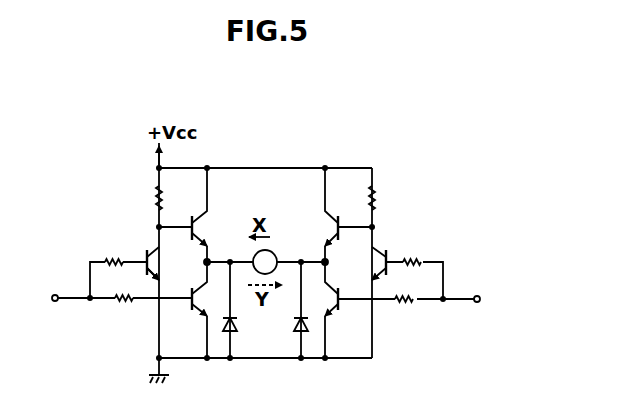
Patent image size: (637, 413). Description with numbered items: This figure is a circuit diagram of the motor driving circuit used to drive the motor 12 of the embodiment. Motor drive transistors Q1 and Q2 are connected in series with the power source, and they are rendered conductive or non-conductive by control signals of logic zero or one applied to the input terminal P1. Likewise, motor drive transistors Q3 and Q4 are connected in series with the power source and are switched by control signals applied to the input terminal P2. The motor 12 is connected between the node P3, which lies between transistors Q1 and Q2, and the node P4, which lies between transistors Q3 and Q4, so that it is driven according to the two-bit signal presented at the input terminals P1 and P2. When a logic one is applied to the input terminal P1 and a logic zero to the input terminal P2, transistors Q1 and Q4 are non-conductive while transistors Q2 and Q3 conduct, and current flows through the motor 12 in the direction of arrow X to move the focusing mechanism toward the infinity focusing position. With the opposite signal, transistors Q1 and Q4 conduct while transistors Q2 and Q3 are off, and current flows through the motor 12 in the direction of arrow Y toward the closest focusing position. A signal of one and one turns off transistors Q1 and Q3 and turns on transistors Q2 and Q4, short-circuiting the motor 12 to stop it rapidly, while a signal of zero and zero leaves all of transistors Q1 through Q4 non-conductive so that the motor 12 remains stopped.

The motor 12 is at (275, 255).
The motor drive transistor Q1 is at (205, 226).
The motor drive transistor Q2 is at (193, 310).
The motor drive transistor Q3 is at (327, 228).
The motor drive transistor Q4 is at (340, 308).
The input terminal P1 is at (191, 290).
The input terminal P2 is at (481, 298).
The node P3 is at (203, 263).
The node P4 is at (341, 266).